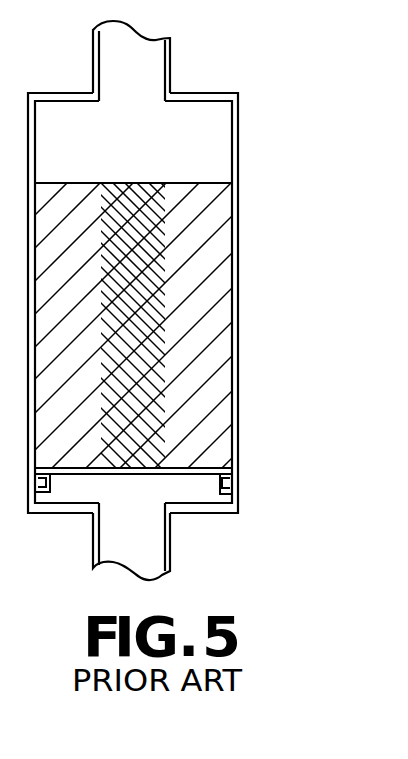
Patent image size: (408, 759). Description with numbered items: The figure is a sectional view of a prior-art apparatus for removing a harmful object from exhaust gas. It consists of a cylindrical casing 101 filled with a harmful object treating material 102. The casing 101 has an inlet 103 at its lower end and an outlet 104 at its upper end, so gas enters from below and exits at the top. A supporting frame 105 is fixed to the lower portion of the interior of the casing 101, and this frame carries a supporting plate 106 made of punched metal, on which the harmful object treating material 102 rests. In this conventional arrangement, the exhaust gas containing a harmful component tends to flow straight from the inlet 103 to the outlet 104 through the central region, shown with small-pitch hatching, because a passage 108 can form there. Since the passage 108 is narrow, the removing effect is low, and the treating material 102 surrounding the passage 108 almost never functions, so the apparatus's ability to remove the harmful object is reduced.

The cylindrical casing 101 is at (238, 165).
The harmful object treating material 102 is at (218, 351).
The inlet 103 is at (155, 550).
The outlet 104 is at (153, 68).
The supporting frame 105 is at (222, 488).
The supporting plate 106 is at (207, 470).
The passage 108 is at (160, 285).